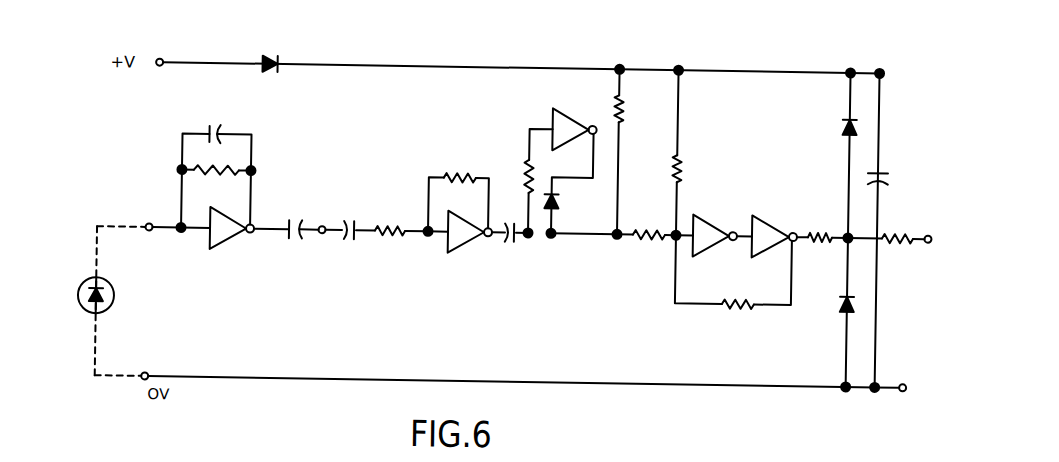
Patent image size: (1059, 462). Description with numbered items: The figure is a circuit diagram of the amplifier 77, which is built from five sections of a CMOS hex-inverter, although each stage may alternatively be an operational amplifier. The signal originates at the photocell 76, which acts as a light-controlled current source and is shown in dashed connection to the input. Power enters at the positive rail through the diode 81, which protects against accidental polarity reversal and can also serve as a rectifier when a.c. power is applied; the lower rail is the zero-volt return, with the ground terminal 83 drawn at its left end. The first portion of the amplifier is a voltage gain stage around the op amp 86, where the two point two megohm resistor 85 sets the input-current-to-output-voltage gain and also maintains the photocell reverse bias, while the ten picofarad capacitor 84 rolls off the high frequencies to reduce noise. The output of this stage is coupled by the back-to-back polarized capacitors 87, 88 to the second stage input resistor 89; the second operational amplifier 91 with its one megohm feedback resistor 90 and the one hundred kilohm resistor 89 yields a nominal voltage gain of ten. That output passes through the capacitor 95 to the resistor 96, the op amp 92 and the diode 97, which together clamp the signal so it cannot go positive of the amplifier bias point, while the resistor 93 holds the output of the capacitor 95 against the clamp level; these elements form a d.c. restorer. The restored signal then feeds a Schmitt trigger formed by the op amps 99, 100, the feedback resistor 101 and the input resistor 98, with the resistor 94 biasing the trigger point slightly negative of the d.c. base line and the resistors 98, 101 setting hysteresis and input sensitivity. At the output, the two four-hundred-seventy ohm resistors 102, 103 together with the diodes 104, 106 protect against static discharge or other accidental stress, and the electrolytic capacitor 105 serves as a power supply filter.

The photocell 76 is at (116, 300).
The amplifier 77 is at (862, 57).
The diode 81 is at (268, 56).
The ground terminal 83 is at (122, 380).
The capacitor 84 is at (218, 128).
The resistor 85 is at (222, 170).
The operational amplifier 86 is at (231, 243).
The polarized capacitor 87 is at (303, 222).
The polarized capacitor 88 is at (346, 238).
The second stage input resistor 89 is at (388, 224).
The feedback resistor 90 is at (458, 170).
The second operational amplifier 91 is at (466, 243).
The op amp 92 is at (566, 120).
The resistor 93 is at (621, 100).
The resistor 94 is at (672, 162).
The capacitor 95 is at (513, 238).
The resistor 96 is at (522, 172).
The diode 97 is at (560, 199).
The input resistor 98 is at (645, 240).
The op amp 99 is at (712, 220).
The op amp 100 is at (772, 222).
The feedback resistor 101 is at (745, 300).
The resistor 102 is at (822, 237).
The resistor 103 is at (902, 235).
The diode 104 is at (858, 295).
The electrolytic capacitor 105 is at (884, 163).
The diode 106 is at (858, 116).